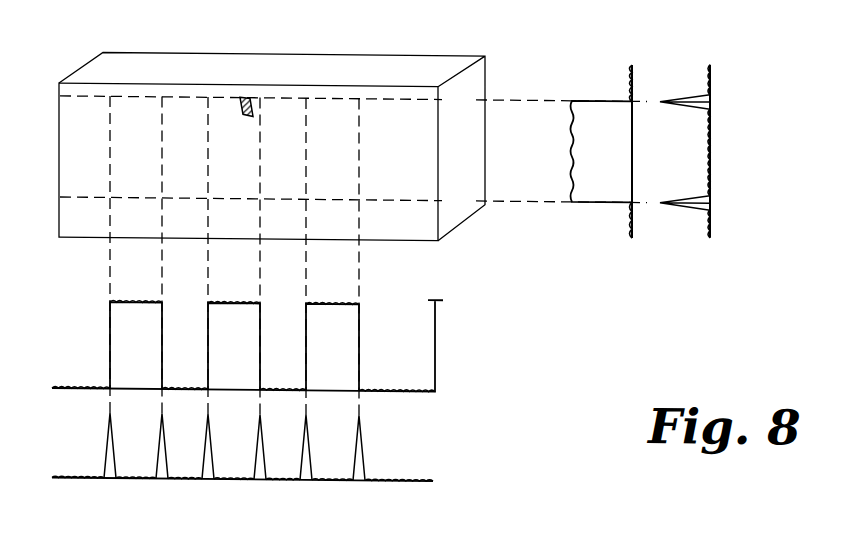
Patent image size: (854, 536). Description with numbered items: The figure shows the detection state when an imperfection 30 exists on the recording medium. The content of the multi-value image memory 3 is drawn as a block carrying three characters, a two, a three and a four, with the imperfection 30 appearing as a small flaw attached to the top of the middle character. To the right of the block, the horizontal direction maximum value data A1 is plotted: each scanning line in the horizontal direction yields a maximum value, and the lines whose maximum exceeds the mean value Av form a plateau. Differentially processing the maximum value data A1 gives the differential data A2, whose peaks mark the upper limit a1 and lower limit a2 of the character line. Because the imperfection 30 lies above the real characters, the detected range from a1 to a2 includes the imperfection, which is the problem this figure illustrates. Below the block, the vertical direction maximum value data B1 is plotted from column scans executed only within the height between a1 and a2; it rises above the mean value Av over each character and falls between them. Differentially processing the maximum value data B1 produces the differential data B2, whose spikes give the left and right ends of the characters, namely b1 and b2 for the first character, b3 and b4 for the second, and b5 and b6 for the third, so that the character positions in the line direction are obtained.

The multi-value image memory 3 is at (393, 58).
The imperfection 30 is at (244, 94).
The upper limit of the character line a1 is at (353, 99).
The lower limit of the character line a2 is at (353, 199).
The left end of the first character b1 is at (112, 254).
The right end of the first character b2 is at (162, 254).
The left end of the second character b3 is at (210, 255).
The right end of the second character b4 is at (260, 255).
The left end of the third character b5 is at (309, 256).
The right end of the third character b6 is at (360, 256).
The horizontal direction maximum value data A1 is at (605, 197).
The horizontal differential data A2 is at (685, 198).
The vertical direction maximum value data B1 is at (435, 324).
The vertical differential data B2 is at (427, 461).